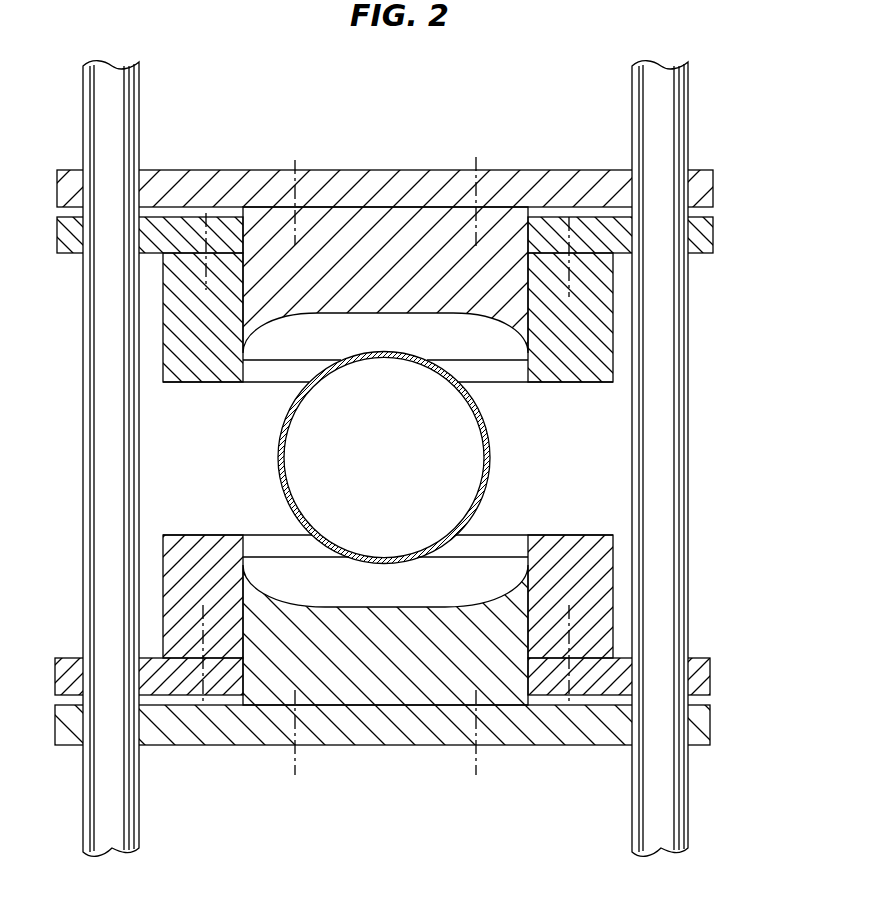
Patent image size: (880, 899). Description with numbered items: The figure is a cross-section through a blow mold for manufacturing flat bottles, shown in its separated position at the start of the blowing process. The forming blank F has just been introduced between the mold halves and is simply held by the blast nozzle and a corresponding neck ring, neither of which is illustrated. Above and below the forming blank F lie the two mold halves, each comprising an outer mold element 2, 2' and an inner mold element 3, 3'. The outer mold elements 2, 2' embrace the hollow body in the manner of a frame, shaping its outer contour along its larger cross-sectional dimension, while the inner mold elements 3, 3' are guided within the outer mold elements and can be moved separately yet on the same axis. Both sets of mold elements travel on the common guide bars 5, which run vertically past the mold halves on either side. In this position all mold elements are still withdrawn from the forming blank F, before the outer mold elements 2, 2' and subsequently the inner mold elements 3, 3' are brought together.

The outer mold element 2 is at (453, 317).
The outer mold element 2' is at (455, 596).
The inner mold element 3 is at (413, 188).
The inner mold element 3' is at (414, 729).
The common guide bars 5 is at (662, 425).
The forming blank F is at (491, 461).